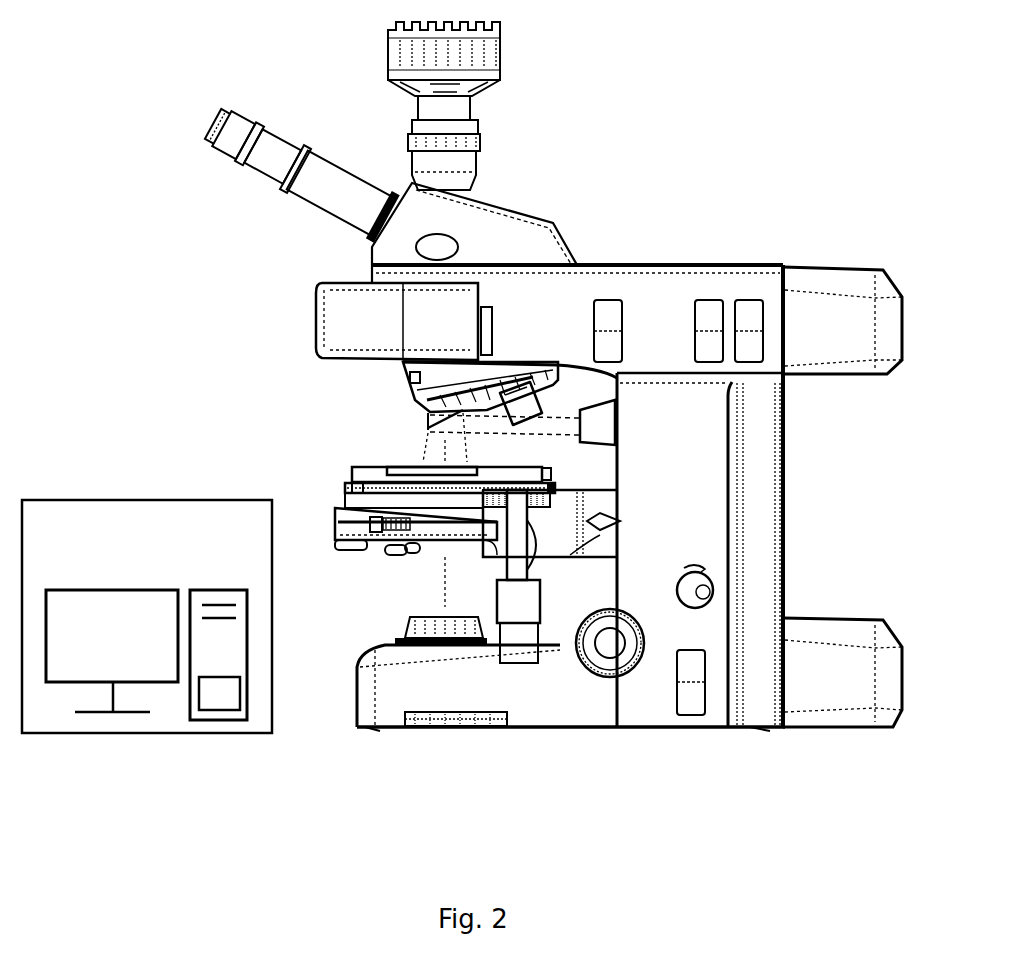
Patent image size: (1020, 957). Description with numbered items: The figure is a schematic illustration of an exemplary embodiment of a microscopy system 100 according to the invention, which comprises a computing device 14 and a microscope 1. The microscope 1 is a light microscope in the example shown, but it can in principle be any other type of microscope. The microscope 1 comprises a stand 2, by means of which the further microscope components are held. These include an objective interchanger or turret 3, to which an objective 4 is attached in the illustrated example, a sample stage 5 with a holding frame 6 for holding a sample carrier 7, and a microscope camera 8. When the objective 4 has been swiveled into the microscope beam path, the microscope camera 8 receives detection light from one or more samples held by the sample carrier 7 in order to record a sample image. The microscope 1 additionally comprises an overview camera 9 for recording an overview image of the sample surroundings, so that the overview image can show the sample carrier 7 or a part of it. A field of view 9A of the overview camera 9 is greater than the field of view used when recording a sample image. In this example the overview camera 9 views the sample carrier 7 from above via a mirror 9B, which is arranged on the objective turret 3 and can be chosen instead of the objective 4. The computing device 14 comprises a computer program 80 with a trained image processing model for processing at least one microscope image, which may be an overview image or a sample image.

The microscopy system 100 is at (671, 70).
The microscope 1 is at (765, 233).
The stand 2 is at (772, 484).
The objective interchanger or turret 3 is at (405, 380).
The objective 4 is at (541, 394).
The sample stage 5 is at (352, 492).
The holding frame 6 is at (352, 481).
The sample carrier 7 is at (387, 470).
The microscope camera 8 is at (501, 46).
The overview camera 9 is at (603, 437).
The field of view 9A is at (427, 446).
The mirror 9B is at (427, 423).
The computing device 14 is at (160, 545).
The computer program 80 is at (230, 702).